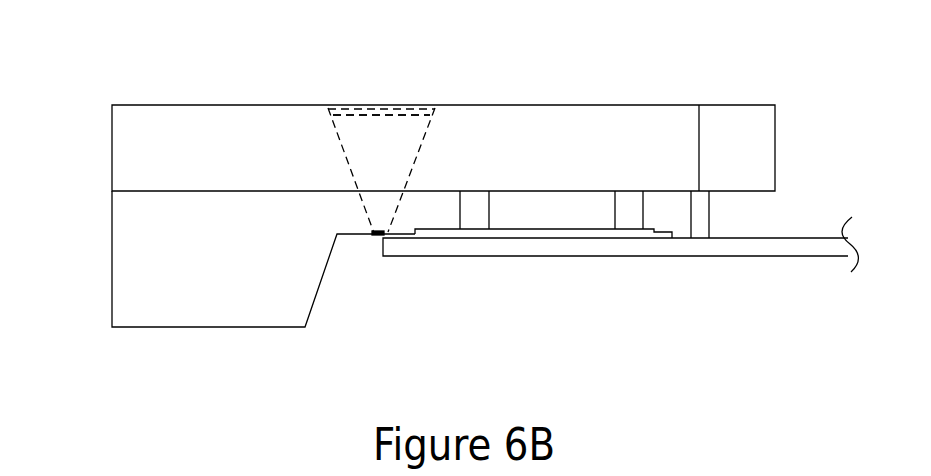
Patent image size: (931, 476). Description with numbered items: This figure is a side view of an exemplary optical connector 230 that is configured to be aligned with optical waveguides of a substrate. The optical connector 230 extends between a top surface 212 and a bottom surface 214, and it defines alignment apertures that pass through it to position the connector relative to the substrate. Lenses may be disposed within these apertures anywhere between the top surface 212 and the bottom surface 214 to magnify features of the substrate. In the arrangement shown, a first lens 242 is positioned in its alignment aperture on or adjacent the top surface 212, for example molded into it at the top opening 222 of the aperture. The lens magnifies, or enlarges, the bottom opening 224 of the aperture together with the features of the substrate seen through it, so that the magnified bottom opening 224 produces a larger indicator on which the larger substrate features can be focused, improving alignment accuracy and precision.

The top surface 212 is at (642, 105).
The bottom surface 214 is at (351, 235).
The top opening 222 is at (377, 95).
The bottom opening 224 is at (373, 242).
The optical connector 230 is at (167, 66).
The first lens 242 is at (397, 110).